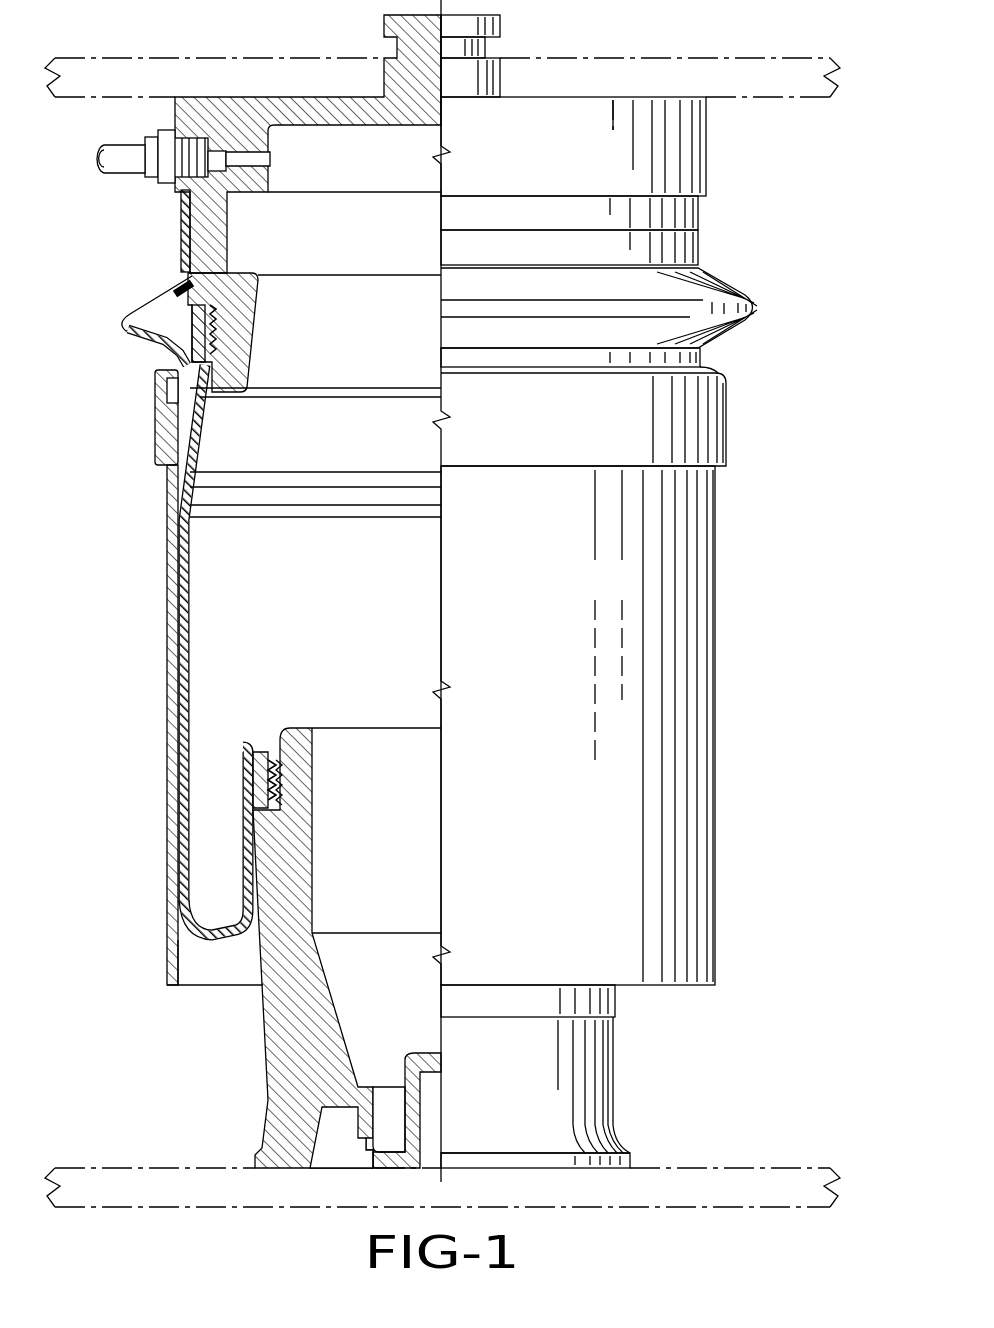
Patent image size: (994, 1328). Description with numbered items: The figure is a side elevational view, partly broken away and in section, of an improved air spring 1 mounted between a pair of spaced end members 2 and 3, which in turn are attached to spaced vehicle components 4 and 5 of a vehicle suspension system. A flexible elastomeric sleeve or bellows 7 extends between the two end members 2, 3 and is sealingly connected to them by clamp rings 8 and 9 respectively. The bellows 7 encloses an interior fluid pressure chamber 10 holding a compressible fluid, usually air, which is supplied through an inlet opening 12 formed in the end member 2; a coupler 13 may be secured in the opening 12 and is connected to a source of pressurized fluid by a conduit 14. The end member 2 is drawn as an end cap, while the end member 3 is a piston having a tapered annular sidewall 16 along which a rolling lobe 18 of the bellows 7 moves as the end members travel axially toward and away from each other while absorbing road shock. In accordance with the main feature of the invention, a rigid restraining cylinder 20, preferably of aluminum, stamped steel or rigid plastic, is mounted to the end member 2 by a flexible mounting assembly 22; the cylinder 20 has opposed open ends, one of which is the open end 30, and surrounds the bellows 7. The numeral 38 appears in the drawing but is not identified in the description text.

The air spring 1 is at (752, 552).
The end member 2 is at (712, 152).
The end member 3 is at (625, 1074).
The vehicle component 4 is at (690, 58).
The vehicle component 5 is at (698, 1207).
The flexible elastomeric sleeve or bellows 7 is at (182, 686).
The clamp ring 8 is at (173, 326).
The clamp ring 9 is at (257, 783).
The fluid pressure chamber 10 is at (315, 624).
The inlet opening 12 is at (235, 155).
The coupler 13 is at (165, 185).
The conduit 14 is at (127, 150).
The tapered annular sidewall 16 is at (268, 1080).
The rolling lobe 18 is at (212, 942).
The rigid restraining cylinder 20 is at (160, 586).
The flexible mounting assembly 22 is at (748, 283).
The open end 30 is at (187, 984).
The seal strip 38 is at (185, 250).